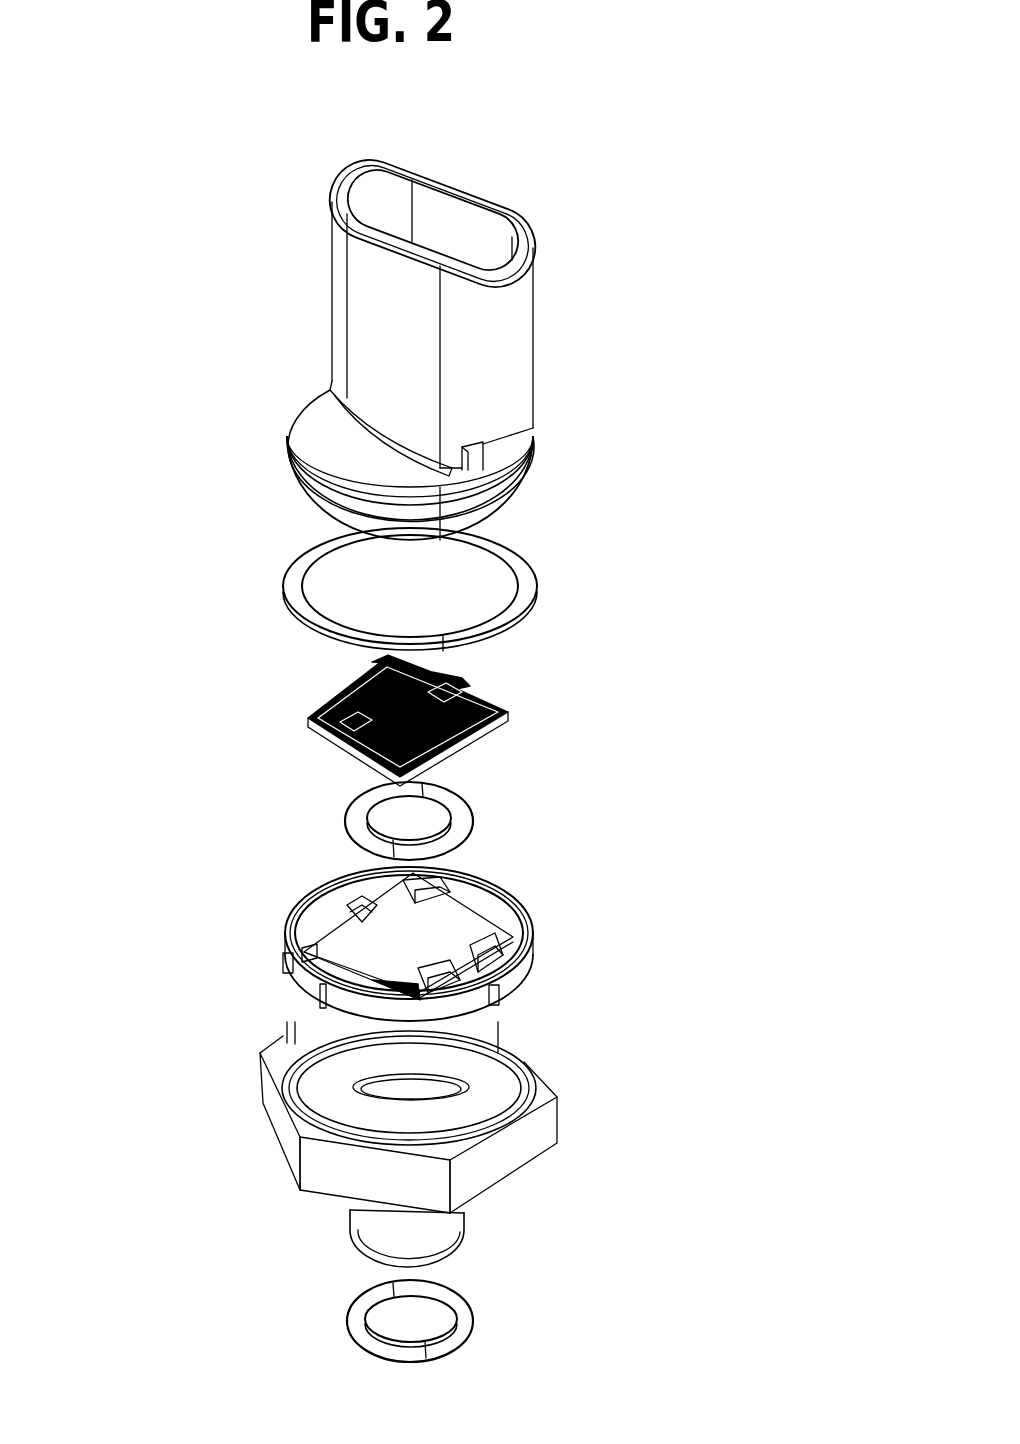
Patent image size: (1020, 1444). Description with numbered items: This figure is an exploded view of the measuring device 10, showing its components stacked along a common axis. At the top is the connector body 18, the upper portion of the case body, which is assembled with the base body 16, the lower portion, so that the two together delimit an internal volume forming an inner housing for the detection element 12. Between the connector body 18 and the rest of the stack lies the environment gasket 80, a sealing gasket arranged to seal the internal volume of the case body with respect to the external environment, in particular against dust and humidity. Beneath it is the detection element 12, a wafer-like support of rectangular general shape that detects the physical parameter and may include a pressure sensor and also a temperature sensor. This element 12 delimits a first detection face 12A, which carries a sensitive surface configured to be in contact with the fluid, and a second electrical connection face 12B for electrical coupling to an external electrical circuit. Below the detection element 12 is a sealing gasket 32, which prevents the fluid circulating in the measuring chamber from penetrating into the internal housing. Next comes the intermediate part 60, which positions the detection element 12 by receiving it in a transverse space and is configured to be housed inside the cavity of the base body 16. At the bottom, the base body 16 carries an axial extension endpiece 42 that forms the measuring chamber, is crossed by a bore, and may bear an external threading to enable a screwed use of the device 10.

The measuring device 10 is at (615, 422).
The connector body 18 is at (343, 347).
The environment gasket 80 is at (300, 612).
The detection element 12 is at (512, 717).
The first detection face 12A is at (337, 742).
The second electrical connection face 12B is at (473, 697).
The sealing gasket 32 is at (347, 818).
The intermediate part 60 is at (532, 945).
The base body 16 is at (553, 1078).
The axial extension endpiece 42 is at (422, 1231).